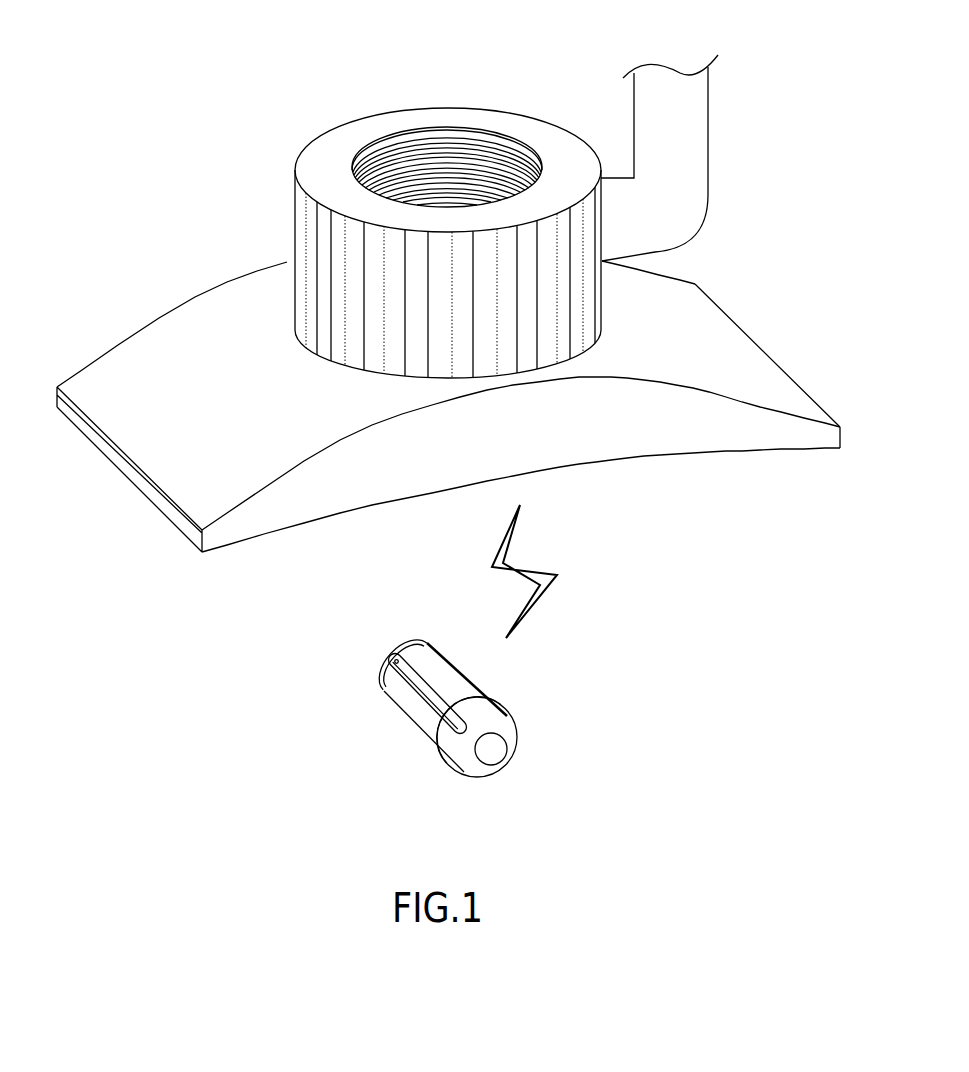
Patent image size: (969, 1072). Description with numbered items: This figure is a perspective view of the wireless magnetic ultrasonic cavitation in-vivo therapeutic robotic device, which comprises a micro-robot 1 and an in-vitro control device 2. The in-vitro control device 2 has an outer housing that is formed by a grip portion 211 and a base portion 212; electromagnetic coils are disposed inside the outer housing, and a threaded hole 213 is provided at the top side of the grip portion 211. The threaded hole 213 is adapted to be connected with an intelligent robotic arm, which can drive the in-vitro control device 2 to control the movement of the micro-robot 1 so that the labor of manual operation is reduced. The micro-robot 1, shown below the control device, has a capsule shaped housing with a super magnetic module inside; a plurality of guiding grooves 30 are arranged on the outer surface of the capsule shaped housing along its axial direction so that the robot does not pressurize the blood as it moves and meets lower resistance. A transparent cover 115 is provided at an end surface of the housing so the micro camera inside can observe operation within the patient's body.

The micro-robot 1 is at (447, 730).
The in-vitro control device 2 is at (448, 276).
The guiding grooves 30 is at (423, 687).
The transparent cover 115 is at (495, 755).
The grip portion 211 is at (335, 265).
The base portion 212 is at (683, 335).
The threaded hole 213 is at (455, 165).